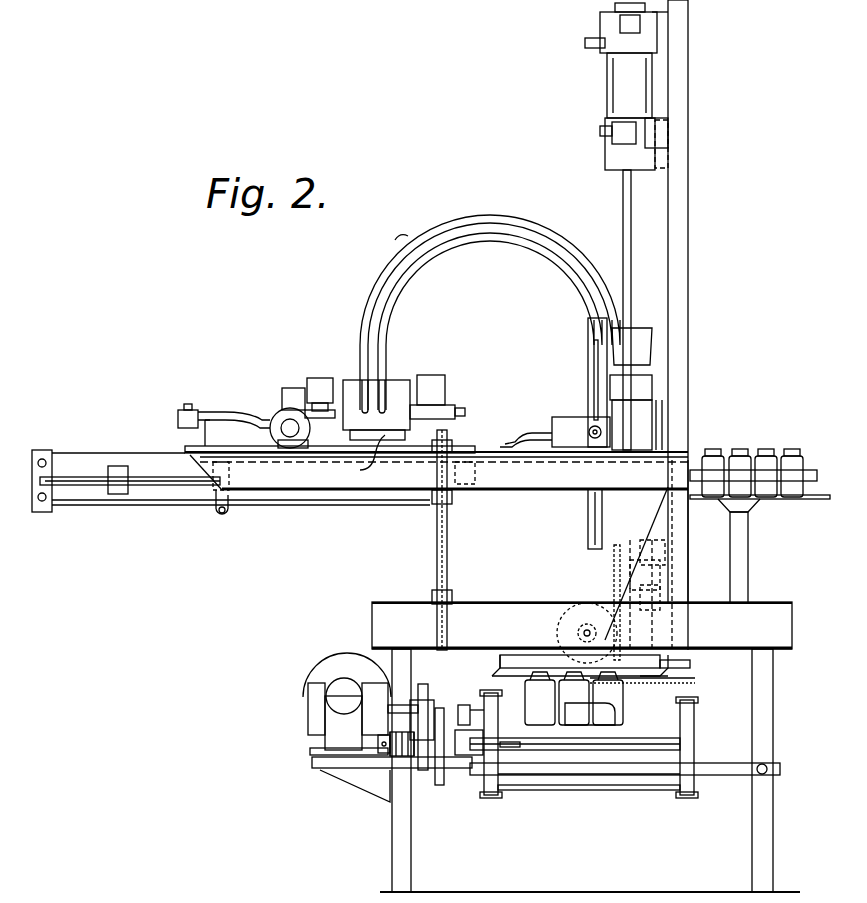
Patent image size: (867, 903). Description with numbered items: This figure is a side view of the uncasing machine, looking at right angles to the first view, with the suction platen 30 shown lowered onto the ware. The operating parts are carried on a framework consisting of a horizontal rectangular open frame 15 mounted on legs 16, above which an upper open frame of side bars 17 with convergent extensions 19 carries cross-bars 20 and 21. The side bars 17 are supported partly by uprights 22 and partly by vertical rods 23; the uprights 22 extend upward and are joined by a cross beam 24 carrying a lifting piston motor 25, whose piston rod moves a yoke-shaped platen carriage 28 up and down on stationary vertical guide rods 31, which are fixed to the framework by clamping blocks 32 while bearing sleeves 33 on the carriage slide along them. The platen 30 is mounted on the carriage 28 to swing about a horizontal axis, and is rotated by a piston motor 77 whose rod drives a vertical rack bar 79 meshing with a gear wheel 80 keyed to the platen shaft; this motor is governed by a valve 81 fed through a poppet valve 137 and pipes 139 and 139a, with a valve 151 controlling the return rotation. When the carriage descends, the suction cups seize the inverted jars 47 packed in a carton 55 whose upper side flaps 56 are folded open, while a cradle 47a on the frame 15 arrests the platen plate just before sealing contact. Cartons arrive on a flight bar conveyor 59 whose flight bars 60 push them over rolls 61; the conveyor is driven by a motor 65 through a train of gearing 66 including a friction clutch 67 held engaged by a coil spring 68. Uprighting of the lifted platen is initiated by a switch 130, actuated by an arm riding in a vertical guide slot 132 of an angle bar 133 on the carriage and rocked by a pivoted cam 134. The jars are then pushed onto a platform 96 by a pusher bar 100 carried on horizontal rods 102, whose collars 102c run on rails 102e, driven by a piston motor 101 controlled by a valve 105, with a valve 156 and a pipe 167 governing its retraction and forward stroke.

The horizontal rectangular open frame 15 is at (410, 580).
The legs 16 is at (408, 836).
The side bars 17 is at (522, 466).
The convergent extensions 19 is at (340, 490).
The cross-bar 20 is at (362, 462).
The cross-bar 21 is at (200, 440).
The uprights 22 is at (680, 216).
The vertical rods 23 is at (435, 532).
The cross beam 24 is at (690, 143).
The piston motor 25 is at (605, 78).
The platen carriage 28 is at (635, 480).
The platen 30 is at (538, 645).
The vertical guide rods 31 is at (623, 212).
The clamping blocks 32 is at (600, 135).
The bearing sleeves 33 is at (652, 386).
The articles 47 is at (768, 450).
The cradle 47a is at (690, 664).
The carton 55 is at (610, 712).
The upper side flaps 56 is at (690, 680).
The flight bar conveyor 59 is at (482, 780).
The flight bars 60 is at (660, 690).
The rolls 61 is at (622, 742).
The motor 65 is at (330, 665).
The train of gearing 66 is at (428, 690).
The friction clutch 67 is at (440, 785).
The coil spring 68 is at (405, 760).
The piston motor 77 is at (662, 415).
The vertical rack bar 79 is at (600, 600).
The gear wheel 80 is at (555, 585).
The valve 81 is at (400, 378).
The platform 96 is at (828, 478).
The pusher bar 100 is at (478, 470).
The piston motor 101 is at (248, 450).
The horizontal rods 102 is at (170, 490).
The collars 102c is at (122, 462).
The rails 102e is at (80, 462).
The valve 105 is at (278, 424).
The switch 130 is at (570, 416).
The vertical guide slot 132 is at (594, 355).
The angle bar 133 is at (588, 330).
The pivoted cam 134 is at (585, 505).
The poppet valve 137 is at (445, 385).
The pipe 139 is at (430, 268).
The pipe 139a is at (420, 244).
The valve 151 is at (320, 376).
The valve 156 is at (295, 386).
The pipe 167 is at (232, 520).